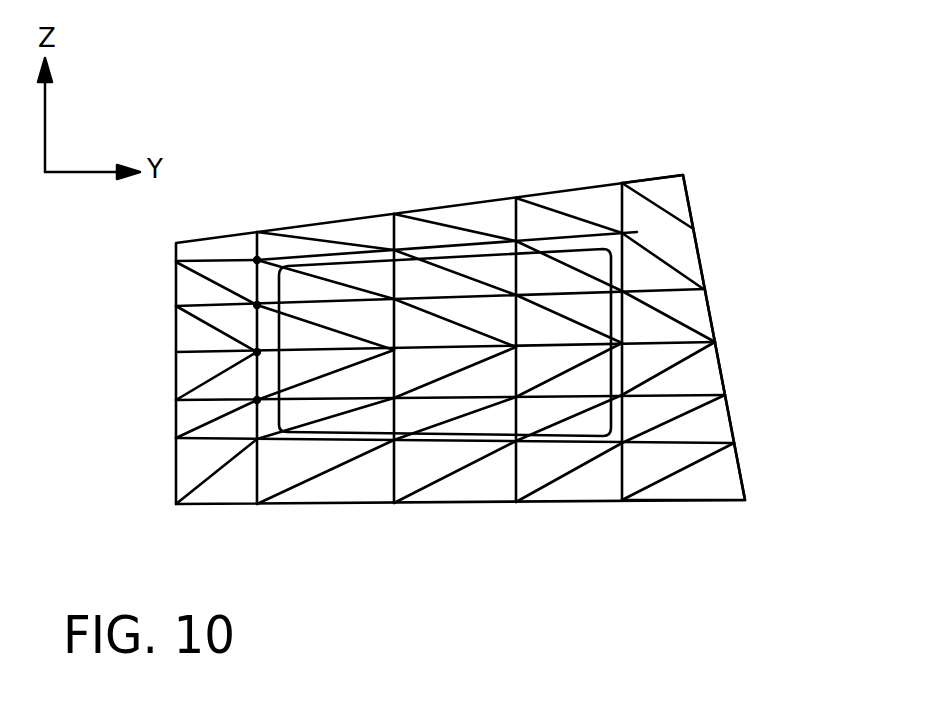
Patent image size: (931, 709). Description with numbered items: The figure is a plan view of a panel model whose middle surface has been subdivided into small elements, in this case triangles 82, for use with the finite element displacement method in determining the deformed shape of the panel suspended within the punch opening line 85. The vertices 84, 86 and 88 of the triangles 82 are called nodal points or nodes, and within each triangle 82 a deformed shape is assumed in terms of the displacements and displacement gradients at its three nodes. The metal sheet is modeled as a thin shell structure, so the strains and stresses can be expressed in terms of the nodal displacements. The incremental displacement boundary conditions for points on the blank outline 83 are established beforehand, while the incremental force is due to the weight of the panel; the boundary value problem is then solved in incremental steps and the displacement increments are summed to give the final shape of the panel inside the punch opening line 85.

The triangles 82 is at (284, 288).
The blank outline 83 is at (557, 243).
The vertex 84 is at (258, 260).
The punch opening line 85 is at (622, 272).
The vertex 86 is at (258, 304).
The vertex 88 is at (394, 297).